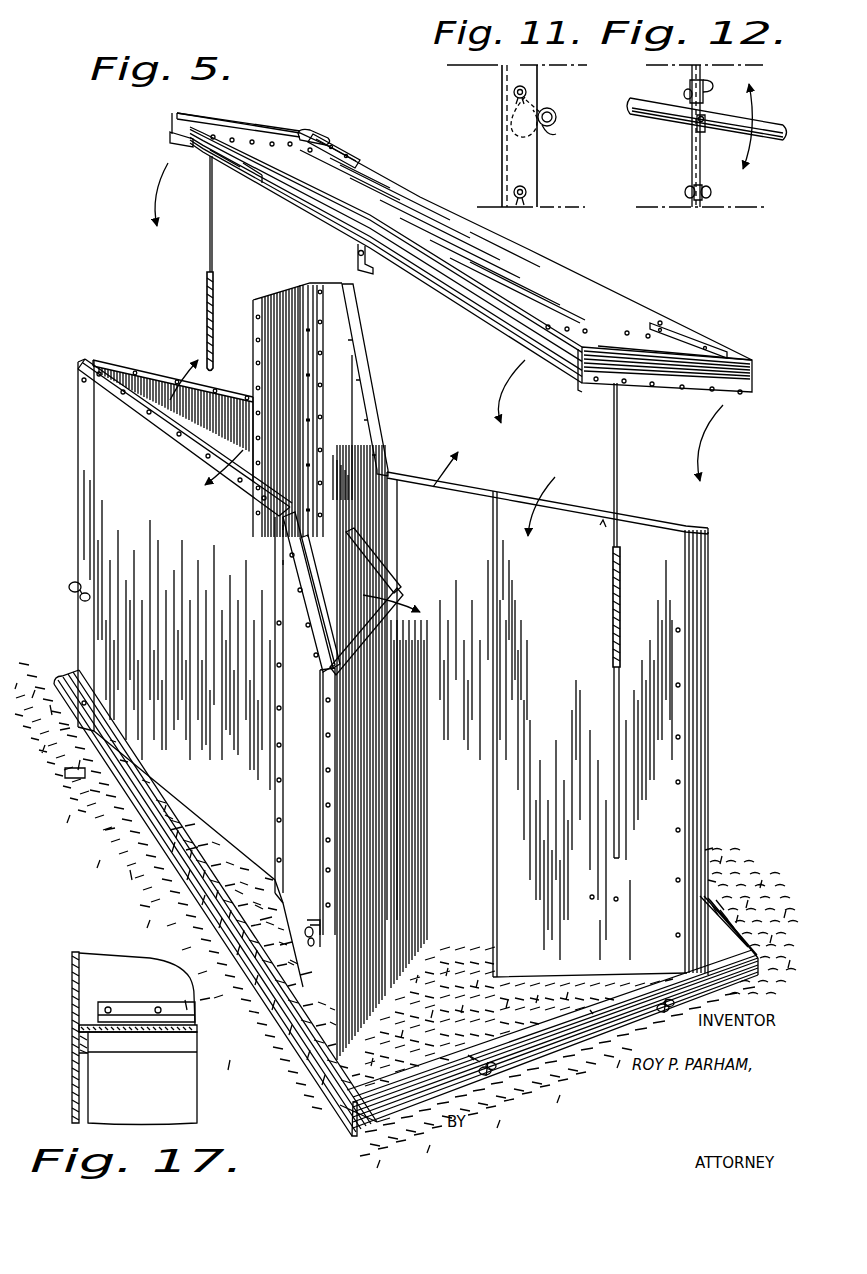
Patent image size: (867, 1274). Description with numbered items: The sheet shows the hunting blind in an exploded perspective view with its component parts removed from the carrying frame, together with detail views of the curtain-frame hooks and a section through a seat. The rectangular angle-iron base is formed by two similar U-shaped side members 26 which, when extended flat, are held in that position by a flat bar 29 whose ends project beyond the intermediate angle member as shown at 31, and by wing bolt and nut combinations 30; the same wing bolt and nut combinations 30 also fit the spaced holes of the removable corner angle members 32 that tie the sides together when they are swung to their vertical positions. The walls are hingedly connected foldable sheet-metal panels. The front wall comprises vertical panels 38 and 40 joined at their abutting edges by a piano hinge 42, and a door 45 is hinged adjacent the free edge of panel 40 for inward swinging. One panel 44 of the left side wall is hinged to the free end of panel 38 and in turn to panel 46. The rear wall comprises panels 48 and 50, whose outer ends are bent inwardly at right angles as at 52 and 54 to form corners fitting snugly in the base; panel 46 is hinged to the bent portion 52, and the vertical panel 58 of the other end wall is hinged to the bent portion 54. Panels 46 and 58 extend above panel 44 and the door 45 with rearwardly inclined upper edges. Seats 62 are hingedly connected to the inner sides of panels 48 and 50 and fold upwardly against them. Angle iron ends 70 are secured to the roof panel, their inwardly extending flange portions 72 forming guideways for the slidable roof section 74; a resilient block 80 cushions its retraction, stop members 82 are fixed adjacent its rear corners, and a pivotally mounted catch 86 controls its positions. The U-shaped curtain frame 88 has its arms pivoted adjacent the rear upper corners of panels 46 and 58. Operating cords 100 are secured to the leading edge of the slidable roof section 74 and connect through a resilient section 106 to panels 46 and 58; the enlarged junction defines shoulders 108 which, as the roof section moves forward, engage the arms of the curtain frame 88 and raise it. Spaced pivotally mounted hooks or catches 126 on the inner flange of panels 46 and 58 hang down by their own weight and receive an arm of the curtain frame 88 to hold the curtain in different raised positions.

In FIG. 5, the U-shaped side members 26 is at (730, 905).
In FIG. 5, the flat bar 29 is at (590, 1010).
In FIG. 5, the wing bolt and nut combinations 30 is at (56, 702).
In FIG. 5, the extending end portion of the flat bar 31 is at (470, 1056).
In FIG. 5, the removable corner angle members 32 is at (78, 620).
In FIG. 5, the front wall panel 38 is at (190, 673).
In FIG. 5, the front wall panel 40 is at (320, 775).
In FIG. 5, the piano hinge 42 is at (272, 708).
In FIG. 5, the left side wall panel 44 is at (145, 385).
In FIG. 5, the door 45 is at (365, 772).
In FIG. 5, the left side wall panel 46 is at (286, 292).
In FIG. 11, the left side wall panel 46 is at (504, 172).
In FIG. 5, the rear wall panel 48 is at (547, 673).
In FIG. 5, the rear wall panel 50 is at (558, 734).
In FIG. 5, the inwardly bent portion of panel 48 52 is at (336, 353).
In FIG. 17, the inwardly bent portion of panel 48 52 is at (72, 990).
In FIG. 5, the inwardly bent portion of panel 50 54 is at (706, 670).
In FIG. 5, the end wall panel 58 is at (586, 750).
In FIG. 17, the seats 62 is at (148, 1032).
In FIG. 5, the angle iron ends 70 is at (325, 134).
In FIG. 5, the inwardly extending flange portions 72 is at (252, 107).
In FIG. 5, the slidable roof section 74 is at (487, 258).
In FIG. 5, the resilient block 80 is at (178, 146).
In FIG. 5, the stop members 82 is at (352, 161).
In FIG. 5, the pivotally mounted catch 86 is at (368, 278).
In FIG. 11, the U-shaped curtain frame 88 is at (553, 110).
In FIG. 12, the U-shaped curtain frame 88 is at (673, 119).
In FIG. 5, the curtain frame operating cords 100 is at (207, 250).
In FIG. 5, the resilient section 106 is at (612, 644).
In FIG. 5, the shoulders 108 is at (206, 280).
In FIG. 11, the latch 126 is at (551, 126).
In FIG. 12, the latch 126 is at (700, 86).